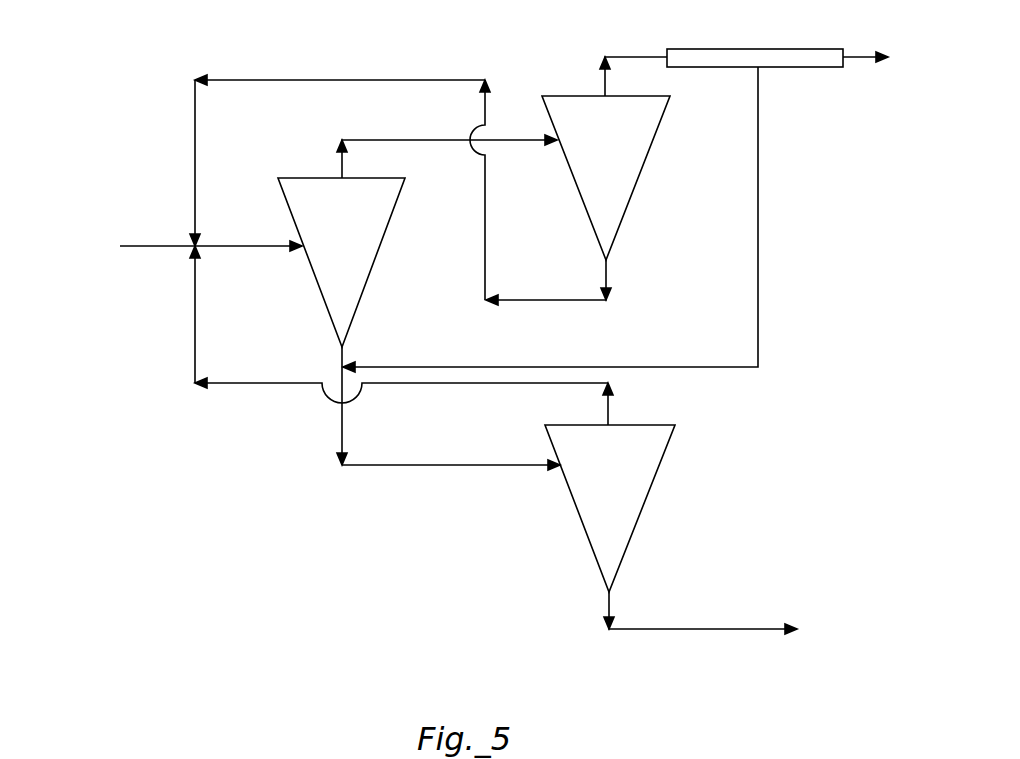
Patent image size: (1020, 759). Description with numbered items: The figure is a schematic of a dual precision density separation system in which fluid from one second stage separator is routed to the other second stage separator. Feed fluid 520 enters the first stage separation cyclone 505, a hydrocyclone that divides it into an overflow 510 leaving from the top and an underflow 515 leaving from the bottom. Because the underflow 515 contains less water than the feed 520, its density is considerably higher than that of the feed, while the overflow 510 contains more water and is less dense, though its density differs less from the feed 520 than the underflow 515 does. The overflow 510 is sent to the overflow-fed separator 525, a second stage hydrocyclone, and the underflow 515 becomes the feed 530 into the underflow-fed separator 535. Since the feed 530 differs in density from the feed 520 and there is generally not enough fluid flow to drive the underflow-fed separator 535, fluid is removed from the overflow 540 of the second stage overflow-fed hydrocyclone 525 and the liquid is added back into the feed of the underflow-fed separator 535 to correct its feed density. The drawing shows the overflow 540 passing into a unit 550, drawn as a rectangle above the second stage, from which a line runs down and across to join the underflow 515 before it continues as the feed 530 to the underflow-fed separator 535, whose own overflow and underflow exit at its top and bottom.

The first stage separation cyclone 505 is at (312, 198).
The overflow 510 is at (342, 163).
The underflow 515 is at (342, 350).
The feed fluid 520 is at (120, 246).
The overflow-fed separator 525 is at (606, 201).
The feed 530 is at (555, 463).
The underflow-fed separator 535 is at (602, 502).
The overflow 540 is at (605, 86).
The filter / treatment unit 550 is at (767, 57).